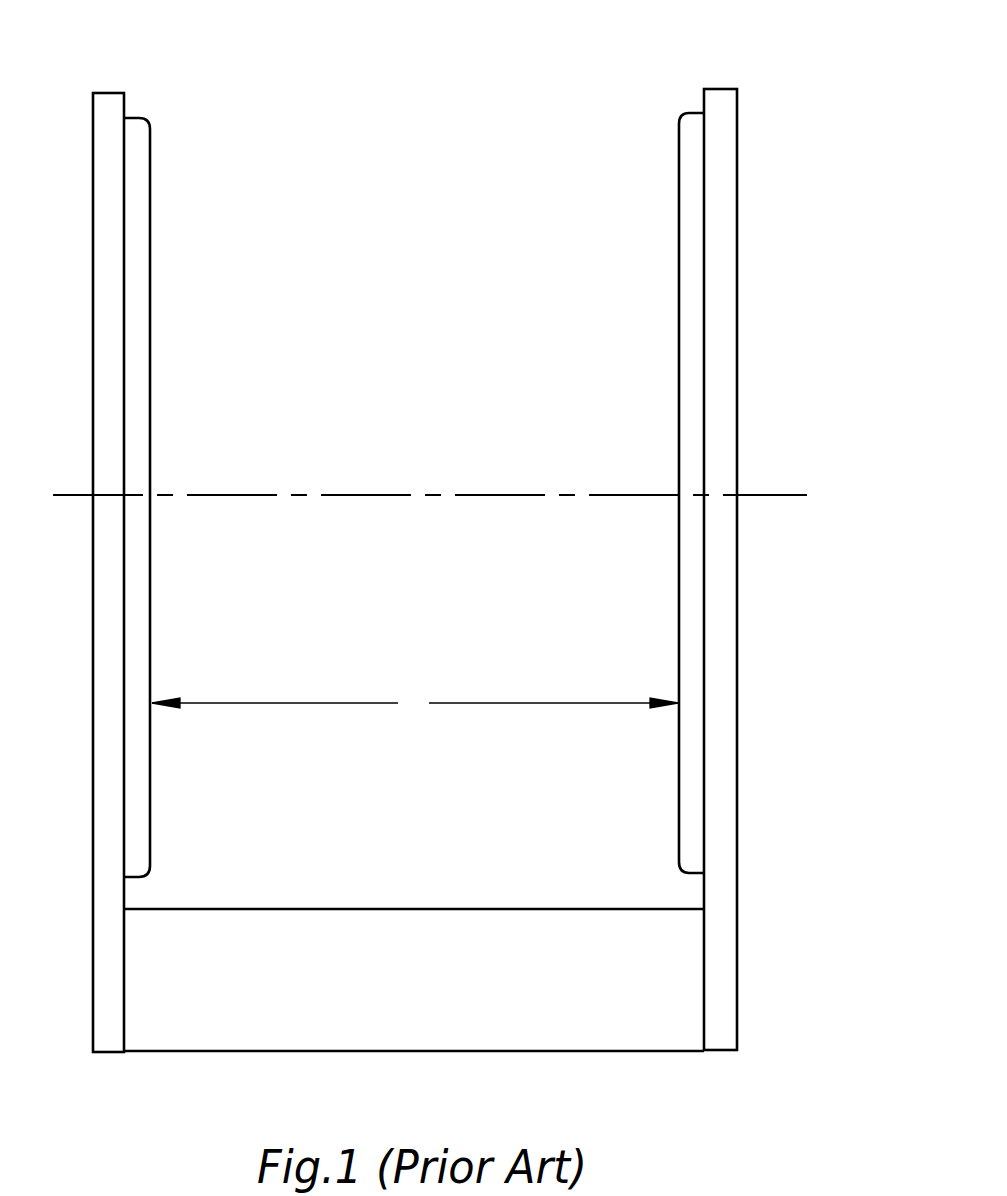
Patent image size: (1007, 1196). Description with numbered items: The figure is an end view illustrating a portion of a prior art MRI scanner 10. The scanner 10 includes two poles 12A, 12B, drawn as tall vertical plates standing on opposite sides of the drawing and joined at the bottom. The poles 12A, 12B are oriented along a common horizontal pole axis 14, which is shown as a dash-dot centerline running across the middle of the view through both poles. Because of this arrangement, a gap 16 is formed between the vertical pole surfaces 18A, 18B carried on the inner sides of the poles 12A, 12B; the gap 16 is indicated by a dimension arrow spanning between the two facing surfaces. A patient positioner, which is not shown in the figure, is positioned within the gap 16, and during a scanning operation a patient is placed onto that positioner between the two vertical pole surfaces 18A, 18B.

The scanner 10 is at (779, 47).
The pole 12A is at (131, 116).
The pole 12B is at (690, 114).
The horizontal pole axis 14 is at (783, 493).
The gap 16 is at (415, 703).
The vertical pole surface 18A is at (151, 252).
The vertical pole surface 18B is at (679, 257).